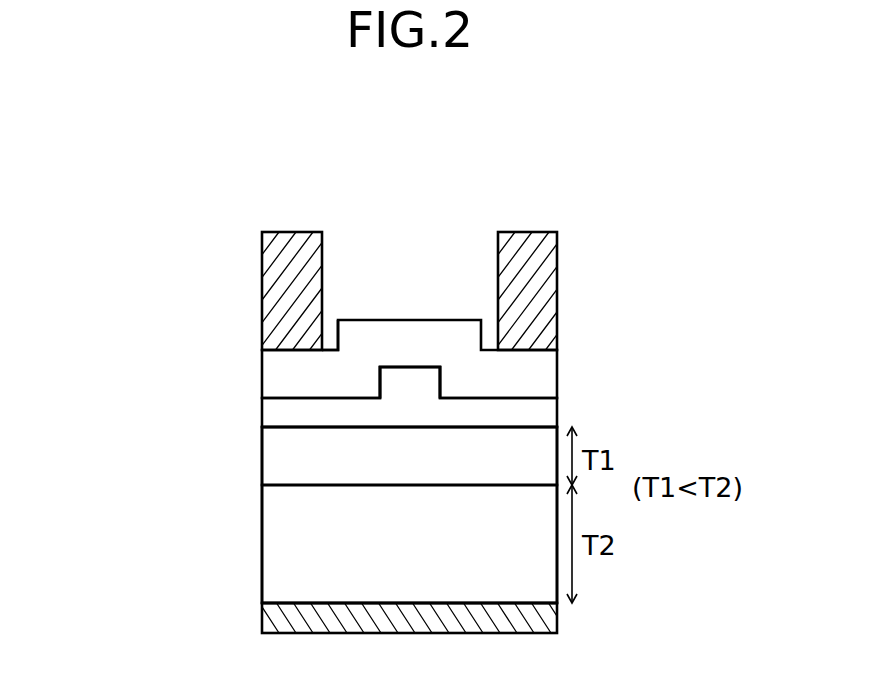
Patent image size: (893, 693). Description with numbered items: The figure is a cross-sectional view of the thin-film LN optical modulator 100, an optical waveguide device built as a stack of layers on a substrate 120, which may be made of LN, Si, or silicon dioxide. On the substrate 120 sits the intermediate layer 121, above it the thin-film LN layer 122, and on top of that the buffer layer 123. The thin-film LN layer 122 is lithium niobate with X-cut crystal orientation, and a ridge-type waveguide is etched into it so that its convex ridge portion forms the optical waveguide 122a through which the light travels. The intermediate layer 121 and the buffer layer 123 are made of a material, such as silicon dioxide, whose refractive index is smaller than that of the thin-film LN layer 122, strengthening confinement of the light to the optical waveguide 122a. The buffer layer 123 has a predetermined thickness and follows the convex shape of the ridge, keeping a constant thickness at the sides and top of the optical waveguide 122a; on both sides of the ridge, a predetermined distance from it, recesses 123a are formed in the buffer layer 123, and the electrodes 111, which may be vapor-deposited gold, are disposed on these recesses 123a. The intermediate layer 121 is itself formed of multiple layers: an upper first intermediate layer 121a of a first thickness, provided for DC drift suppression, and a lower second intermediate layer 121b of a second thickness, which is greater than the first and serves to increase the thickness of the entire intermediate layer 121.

The thin-film LN optical modulator 100 is at (633, 150).
The electrode 111 is at (268, 296).
The substrate 120 is at (546, 625).
The intermediate layer 121 is at (148, 438).
The first intermediate layer 121a is at (268, 463).
The second intermediate layer 121b is at (268, 552).
The thin-film LN layer 122 is at (546, 415).
The optical waveguide 122a is at (407, 385).
The buffer layer 123 is at (268, 376).
The recess 123a is at (329, 347).